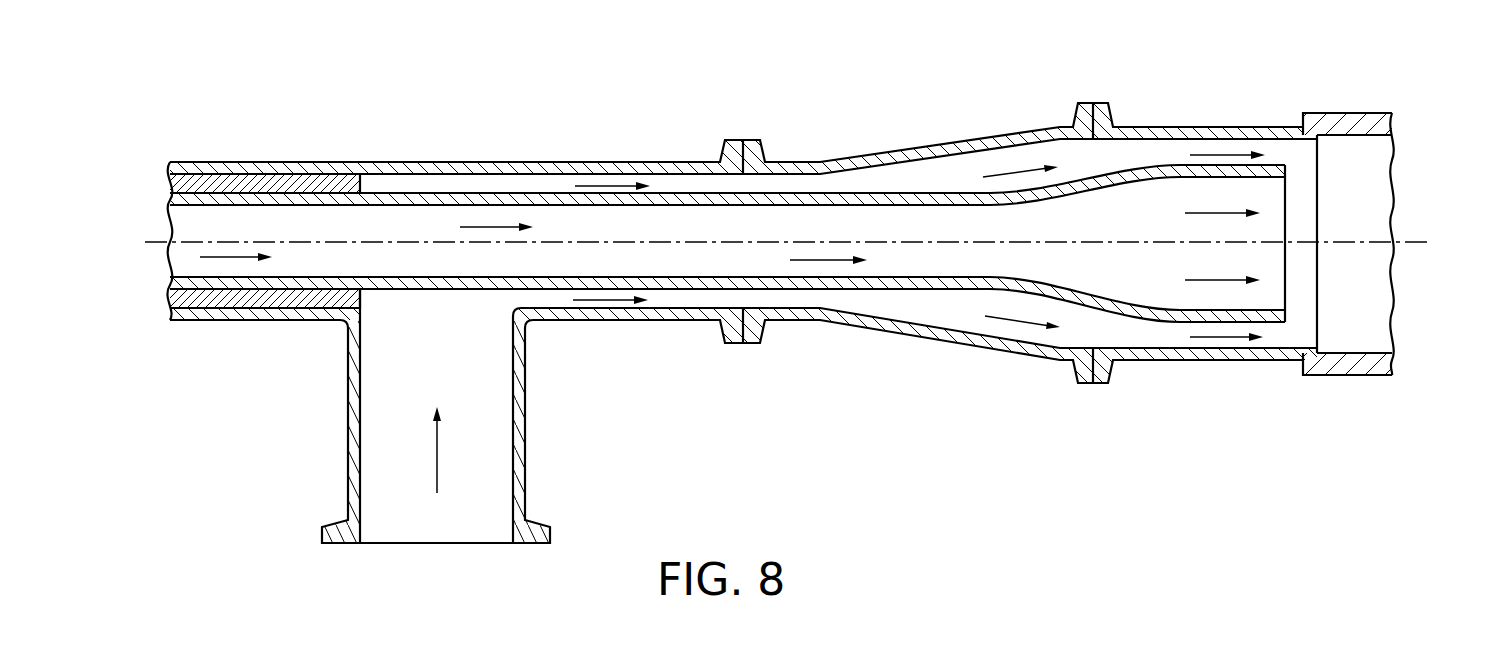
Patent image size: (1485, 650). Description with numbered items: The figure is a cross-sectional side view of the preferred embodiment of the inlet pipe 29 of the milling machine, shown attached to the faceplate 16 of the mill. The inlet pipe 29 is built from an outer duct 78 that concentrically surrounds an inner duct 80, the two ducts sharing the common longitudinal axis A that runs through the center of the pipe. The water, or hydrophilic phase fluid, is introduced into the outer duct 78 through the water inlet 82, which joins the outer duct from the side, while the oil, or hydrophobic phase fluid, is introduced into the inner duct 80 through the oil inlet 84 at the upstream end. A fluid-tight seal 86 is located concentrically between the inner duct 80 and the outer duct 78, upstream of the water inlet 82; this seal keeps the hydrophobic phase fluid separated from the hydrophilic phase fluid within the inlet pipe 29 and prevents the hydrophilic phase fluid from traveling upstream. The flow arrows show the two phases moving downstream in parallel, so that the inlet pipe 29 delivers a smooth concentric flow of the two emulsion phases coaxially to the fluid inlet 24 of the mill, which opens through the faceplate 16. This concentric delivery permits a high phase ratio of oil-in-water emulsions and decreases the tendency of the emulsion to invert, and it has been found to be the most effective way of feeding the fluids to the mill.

The faceplate 16 is at (1357, 118).
The fluid inlet 24 is at (1373, 207).
The inlet pipe 29 is at (1185, 92).
The outer duct 78 is at (820, 162).
The inner duct 80 is at (926, 280).
The water inlet 82 is at (460, 365).
The oil inlet 84 is at (383, 269).
The fluid-tight seal 86 is at (308, 180).
The longitudinal axis A is at (1408, 240).